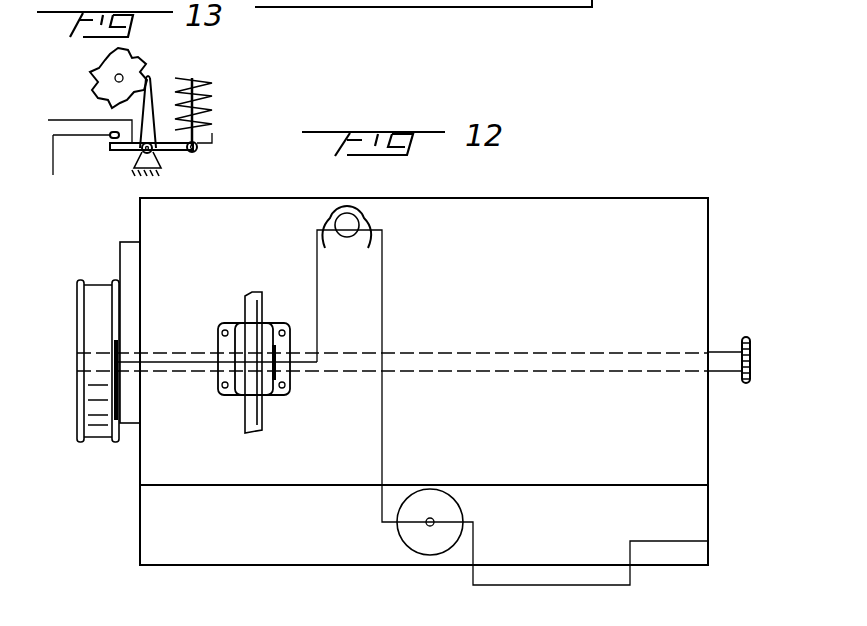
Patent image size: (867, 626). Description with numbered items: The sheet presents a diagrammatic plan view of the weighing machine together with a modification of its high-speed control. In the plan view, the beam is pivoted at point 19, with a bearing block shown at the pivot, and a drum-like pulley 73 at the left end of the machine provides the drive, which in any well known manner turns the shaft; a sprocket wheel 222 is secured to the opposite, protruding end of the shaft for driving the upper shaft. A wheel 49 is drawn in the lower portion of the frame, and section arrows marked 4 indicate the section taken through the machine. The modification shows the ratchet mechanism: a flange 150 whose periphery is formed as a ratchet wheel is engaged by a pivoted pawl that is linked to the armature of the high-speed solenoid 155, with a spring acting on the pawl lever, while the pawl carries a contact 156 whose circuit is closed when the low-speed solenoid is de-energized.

In FIG. 13, the flange 150 is at (95, 88).
In FIG. 13, the solenoid 155 is at (175, 62).
In FIG. 13, the contact 156 is at (112, 148).
In FIG. 12, the pulley 73 is at (93, 293).
In FIG. 12, the pivot point 19 is at (283, 380).
In FIG. 12, the wheel 49 is at (455, 514).
In FIG. 12, the sprocket wheel 222 is at (766, 318).
In FIG. 12, the section line 4 is at (57, 408).